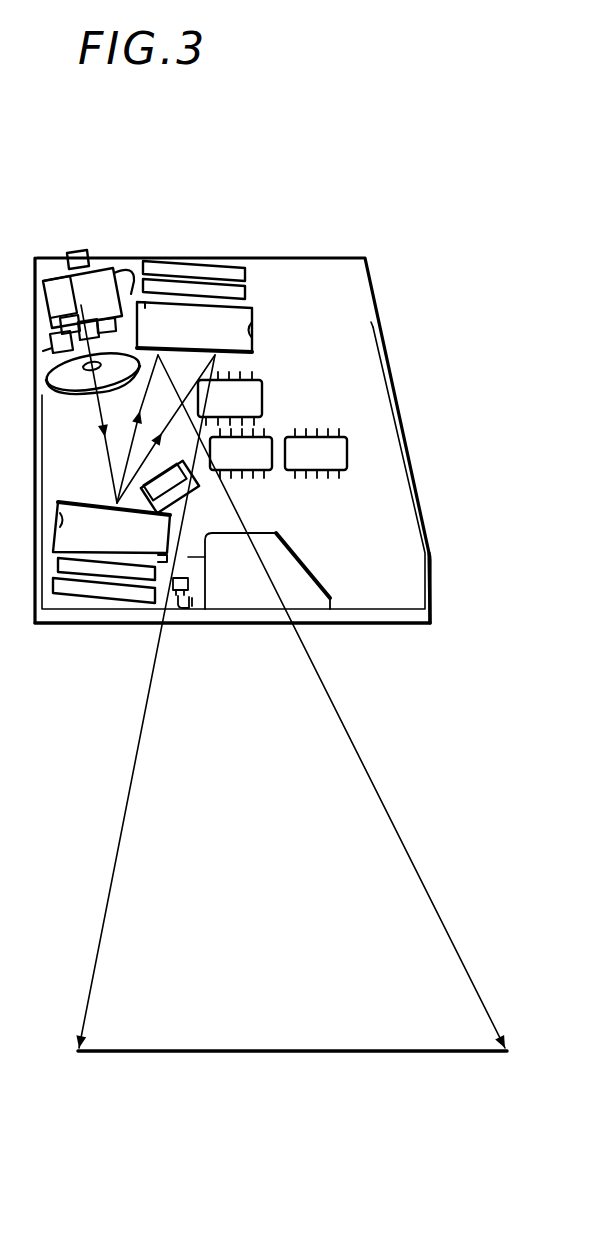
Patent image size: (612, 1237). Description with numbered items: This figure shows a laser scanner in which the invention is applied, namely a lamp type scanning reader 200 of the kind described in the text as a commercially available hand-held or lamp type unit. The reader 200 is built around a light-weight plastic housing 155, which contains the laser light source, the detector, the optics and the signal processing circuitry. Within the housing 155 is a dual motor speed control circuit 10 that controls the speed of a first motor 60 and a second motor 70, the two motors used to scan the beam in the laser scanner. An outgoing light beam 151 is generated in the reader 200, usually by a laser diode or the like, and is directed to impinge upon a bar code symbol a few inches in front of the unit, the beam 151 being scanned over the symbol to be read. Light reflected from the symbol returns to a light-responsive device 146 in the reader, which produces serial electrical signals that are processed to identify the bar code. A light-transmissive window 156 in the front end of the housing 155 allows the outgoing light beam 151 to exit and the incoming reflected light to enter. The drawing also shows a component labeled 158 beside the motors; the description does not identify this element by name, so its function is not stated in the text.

The dual motor speed control circuit 10 is at (280, 392).
The first motor 60 is at (112, 558).
The second motor 70 is at (200, 322).
The light-responsive device 146 is at (218, 501).
The outgoing light beam 151 is at (392, 817).
The housing 155 is at (432, 588).
The light-transmissive window 156 is at (347, 620).
The scan motor 158 is at (103, 283).
The reader 200 is at (380, 297).